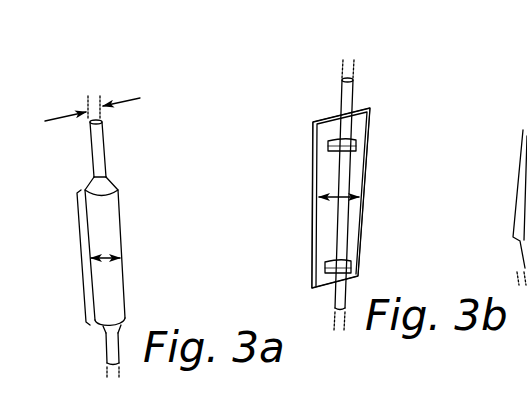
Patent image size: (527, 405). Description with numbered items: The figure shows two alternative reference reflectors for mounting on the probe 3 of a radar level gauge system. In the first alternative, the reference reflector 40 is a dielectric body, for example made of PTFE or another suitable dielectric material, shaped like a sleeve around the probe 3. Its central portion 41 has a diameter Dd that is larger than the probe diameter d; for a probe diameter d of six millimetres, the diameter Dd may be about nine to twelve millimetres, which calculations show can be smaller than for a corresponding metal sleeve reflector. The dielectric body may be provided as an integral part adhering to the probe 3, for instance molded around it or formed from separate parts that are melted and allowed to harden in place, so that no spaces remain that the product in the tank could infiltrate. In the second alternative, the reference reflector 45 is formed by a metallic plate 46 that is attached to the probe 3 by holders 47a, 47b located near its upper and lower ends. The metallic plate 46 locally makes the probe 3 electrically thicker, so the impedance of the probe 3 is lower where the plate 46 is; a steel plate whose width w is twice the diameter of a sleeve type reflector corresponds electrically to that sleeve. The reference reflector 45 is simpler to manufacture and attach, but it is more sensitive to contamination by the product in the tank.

In FIG. 3a, the probe 3 is at (105, 147).
In FIG. 3b, the probe 3 is at (354, 85).
In FIG. 3a, the reference reflector 40 is at (160, 205).
In FIG. 3a, the central portion 41 is at (67, 257).
In FIG. 3a, the probe diameter d is at (92, 104).
In FIG. 3a, the diameter of the dielectric reference reflector Dd is at (108, 259).
In FIG. 3b, the reference reflector 45 is at (389, 160).
In FIG. 3b, the metallic plate 46 is at (357, 240).
In FIG. 3b, the width w is at (339, 198).
In FIG. 3b, the holder 47a is at (333, 146).
In FIG. 3b, the holder 47b is at (328, 268).